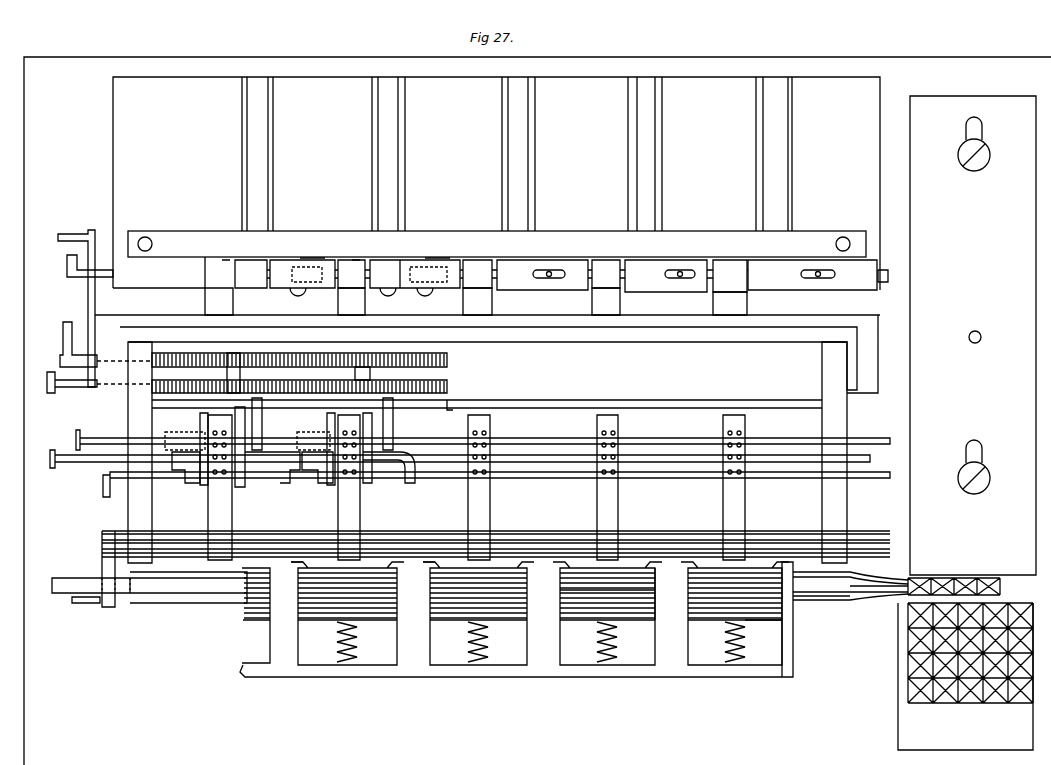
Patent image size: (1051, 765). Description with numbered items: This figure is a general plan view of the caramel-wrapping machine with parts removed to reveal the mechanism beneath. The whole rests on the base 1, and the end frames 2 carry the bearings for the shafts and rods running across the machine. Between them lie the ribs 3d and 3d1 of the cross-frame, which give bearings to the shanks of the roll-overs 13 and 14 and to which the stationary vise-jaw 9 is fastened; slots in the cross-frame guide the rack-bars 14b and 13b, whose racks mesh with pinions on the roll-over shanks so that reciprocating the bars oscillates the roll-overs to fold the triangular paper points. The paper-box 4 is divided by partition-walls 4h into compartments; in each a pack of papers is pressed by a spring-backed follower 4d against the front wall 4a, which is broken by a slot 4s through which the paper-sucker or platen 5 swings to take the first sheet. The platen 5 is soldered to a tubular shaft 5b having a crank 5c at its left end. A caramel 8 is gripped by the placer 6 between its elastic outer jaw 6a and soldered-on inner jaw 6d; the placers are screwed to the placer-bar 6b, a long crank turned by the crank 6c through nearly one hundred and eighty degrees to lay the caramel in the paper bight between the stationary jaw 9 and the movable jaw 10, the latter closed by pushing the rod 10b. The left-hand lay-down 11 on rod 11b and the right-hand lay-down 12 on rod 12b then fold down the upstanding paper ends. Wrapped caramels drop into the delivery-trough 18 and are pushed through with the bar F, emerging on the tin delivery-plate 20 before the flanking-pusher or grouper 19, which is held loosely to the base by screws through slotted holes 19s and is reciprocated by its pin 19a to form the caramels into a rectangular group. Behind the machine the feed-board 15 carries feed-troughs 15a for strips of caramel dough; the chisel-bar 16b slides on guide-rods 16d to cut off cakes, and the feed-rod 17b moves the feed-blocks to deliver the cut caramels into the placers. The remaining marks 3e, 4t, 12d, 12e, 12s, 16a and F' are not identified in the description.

The base 1 is at (537, 411).
The end frames 2 is at (487, 452).
The rib of the cross-frame 3d is at (499, 354).
The rib of the cross-frame 3d1 is at (487, 418).
The bracket 3e is at (487, 415).
The paper-box 4 is at (516, 619).
The front wall 4a is at (413, 568).
The slot 4s is at (305, 566).
The partition-walls 4h is at (593, 600).
The block partition 4t is at (655, 590).
The follower 4d is at (771, 622).
The paper-sucker or platen 5 is at (476, 487).
The tubular shaft 5b is at (527, 513).
The crank 5c is at (82, 604).
The placer 6 is at (491, 276).
The outer jaw 6a is at (358, 262).
The placer-bar 6b is at (160, 318).
The crank 6c is at (62, 232).
The inner jaw 6d is at (350, 300).
The caramel 8 is at (908, 662).
The stationary jaw 9 is at (329, 424).
The movable jaw 10 is at (310, 478).
The actuating-rod 10b is at (780, 484).
The left-hand lay-down plate 11 is at (306, 432).
The actuating-rod 11b is at (672, 437).
The right-hand lay-down plate 12 is at (418, 480).
The actuating-rod 12b is at (655, 500).
The slide top 12d is at (425, 260).
The rollers 12e is at (425, 292).
The slots 12s is at (680, 292).
The right-hand roll-over 13 is at (372, 482).
The rack-bar 13b is at (462, 385).
The left-hand roll-over 14 is at (328, 486).
The rack-bar 14b is at (462, 362).
The feed-board 15 is at (496, 184).
The feed-troughs 15a is at (525, 160).
The rail screw 16a is at (845, 237).
The chisel-bar 16b is at (497, 244).
The guide-rods 16d is at (147, 237).
The feed-rod 17b is at (70, 262).
The delivery-trough 18 is at (832, 600).
The flanking-pusher or grouper 19 is at (973, 335).
The projecting pin 19a is at (981, 337).
The slotted holes 19s is at (1000, 460).
The delivery-plate 20 is at (965, 676).
The bar F is at (149, 580).
The feed rod F' is at (850, 586).